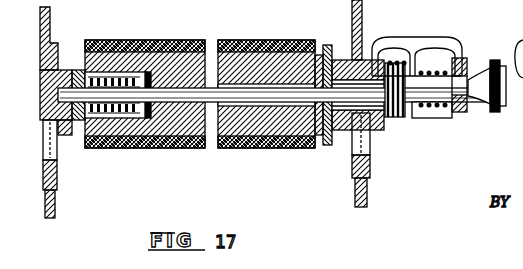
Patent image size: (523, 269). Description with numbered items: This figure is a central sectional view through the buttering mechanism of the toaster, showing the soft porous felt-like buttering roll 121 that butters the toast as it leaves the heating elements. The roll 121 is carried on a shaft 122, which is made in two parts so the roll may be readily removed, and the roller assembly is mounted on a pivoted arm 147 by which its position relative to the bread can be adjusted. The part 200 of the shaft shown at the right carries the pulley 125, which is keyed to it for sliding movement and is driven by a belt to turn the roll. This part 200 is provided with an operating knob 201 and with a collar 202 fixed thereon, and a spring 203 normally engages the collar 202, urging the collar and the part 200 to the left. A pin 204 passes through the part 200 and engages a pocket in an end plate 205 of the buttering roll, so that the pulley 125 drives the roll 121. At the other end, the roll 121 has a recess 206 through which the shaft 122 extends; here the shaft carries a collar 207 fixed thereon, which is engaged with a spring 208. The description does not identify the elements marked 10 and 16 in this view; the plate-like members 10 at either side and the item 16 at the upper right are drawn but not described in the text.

The frame plate 10 is at (38, 20).
The indicator 16 is at (517, 61).
The buttering roll 121 is at (184, 42).
The shaft 122 is at (158, 150).
The pulley 125 is at (398, 112).
The arm 147 is at (62, 150).
The shaft part 200 is at (366, 132).
The operating knob 201 is at (497, 113).
The collar 202 is at (424, 113).
The spring 203 is at (440, 105).
The pin 204 is at (363, 38).
The end plate 205 is at (326, 147).
The recess 206 is at (142, 150).
The collar 207 is at (114, 148).
The spring 208 is at (140, 30).